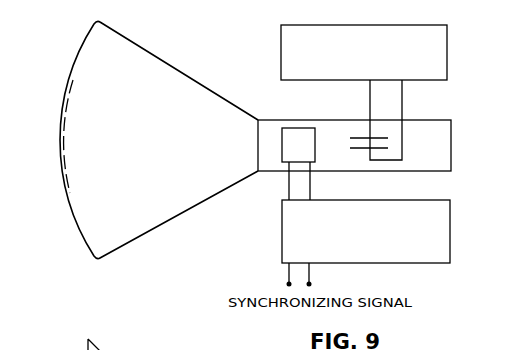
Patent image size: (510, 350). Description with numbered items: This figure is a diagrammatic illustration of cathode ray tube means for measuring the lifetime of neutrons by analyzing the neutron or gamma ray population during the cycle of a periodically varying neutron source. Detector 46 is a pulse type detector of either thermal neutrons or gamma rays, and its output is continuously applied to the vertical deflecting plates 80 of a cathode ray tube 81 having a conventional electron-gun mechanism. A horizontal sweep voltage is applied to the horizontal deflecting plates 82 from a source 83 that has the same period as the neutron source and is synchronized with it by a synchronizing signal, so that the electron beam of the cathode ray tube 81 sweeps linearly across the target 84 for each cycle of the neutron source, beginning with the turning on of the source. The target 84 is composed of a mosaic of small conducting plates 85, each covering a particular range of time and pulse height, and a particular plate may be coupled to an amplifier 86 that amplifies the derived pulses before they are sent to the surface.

The detector 46 is at (281, 42).
The vertical deflecting plates 80 is at (358, 148).
The cathode ray tube 81 is at (223, 191).
The horizontal deflecting plates 82 is at (282, 158).
The horizontal sweep voltage source 83 is at (282, 217).
The target 84 is at (59, 139).
The conducting plates 85 is at (66, 174).
The amplifier 86 is at (112, 347).